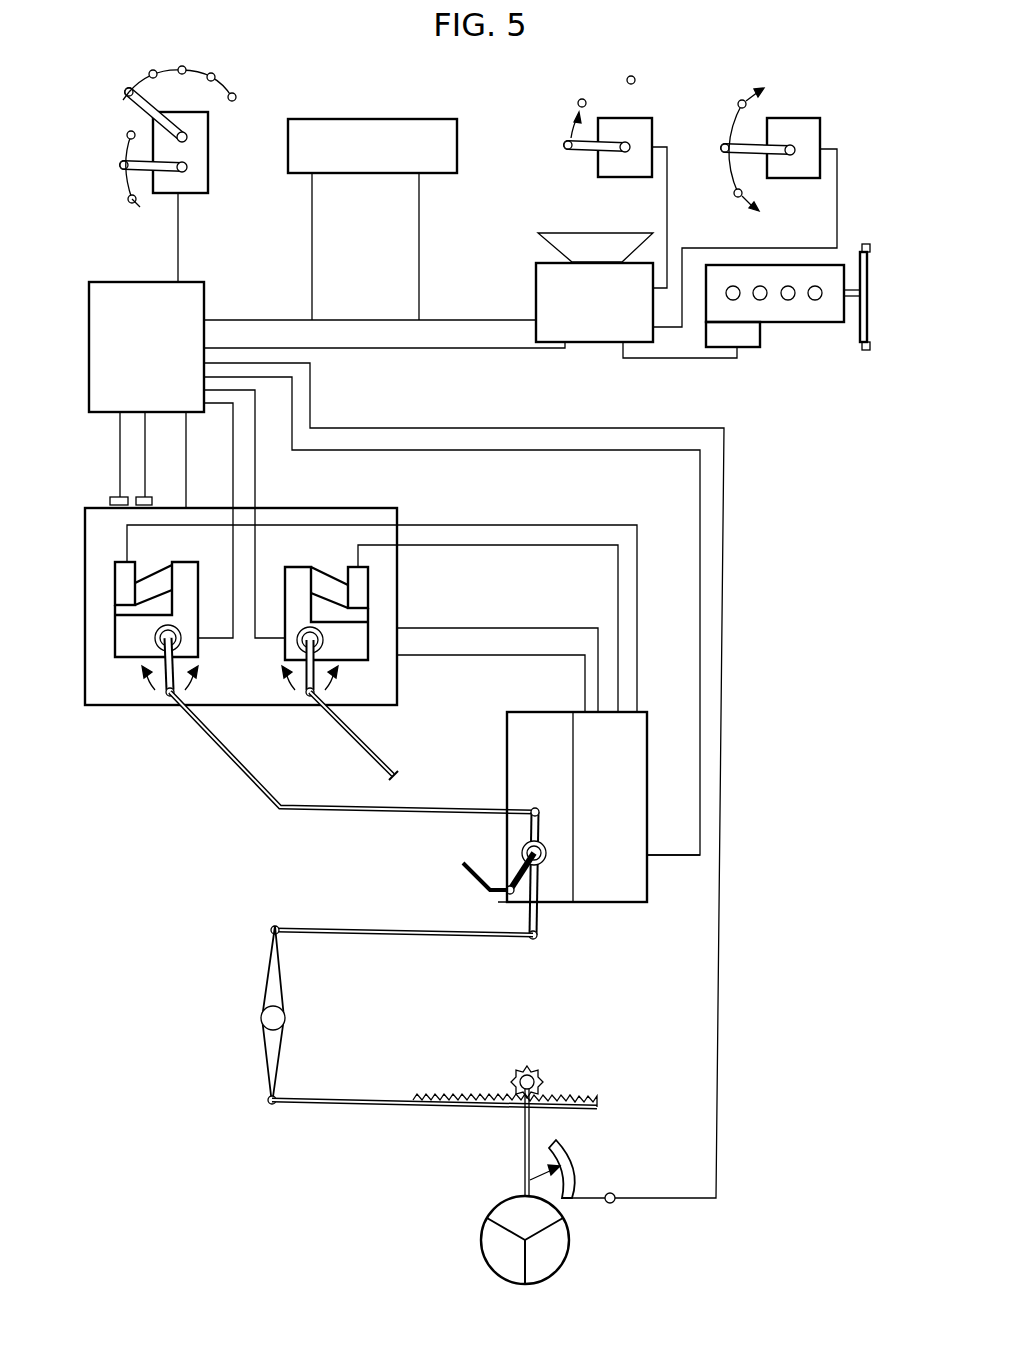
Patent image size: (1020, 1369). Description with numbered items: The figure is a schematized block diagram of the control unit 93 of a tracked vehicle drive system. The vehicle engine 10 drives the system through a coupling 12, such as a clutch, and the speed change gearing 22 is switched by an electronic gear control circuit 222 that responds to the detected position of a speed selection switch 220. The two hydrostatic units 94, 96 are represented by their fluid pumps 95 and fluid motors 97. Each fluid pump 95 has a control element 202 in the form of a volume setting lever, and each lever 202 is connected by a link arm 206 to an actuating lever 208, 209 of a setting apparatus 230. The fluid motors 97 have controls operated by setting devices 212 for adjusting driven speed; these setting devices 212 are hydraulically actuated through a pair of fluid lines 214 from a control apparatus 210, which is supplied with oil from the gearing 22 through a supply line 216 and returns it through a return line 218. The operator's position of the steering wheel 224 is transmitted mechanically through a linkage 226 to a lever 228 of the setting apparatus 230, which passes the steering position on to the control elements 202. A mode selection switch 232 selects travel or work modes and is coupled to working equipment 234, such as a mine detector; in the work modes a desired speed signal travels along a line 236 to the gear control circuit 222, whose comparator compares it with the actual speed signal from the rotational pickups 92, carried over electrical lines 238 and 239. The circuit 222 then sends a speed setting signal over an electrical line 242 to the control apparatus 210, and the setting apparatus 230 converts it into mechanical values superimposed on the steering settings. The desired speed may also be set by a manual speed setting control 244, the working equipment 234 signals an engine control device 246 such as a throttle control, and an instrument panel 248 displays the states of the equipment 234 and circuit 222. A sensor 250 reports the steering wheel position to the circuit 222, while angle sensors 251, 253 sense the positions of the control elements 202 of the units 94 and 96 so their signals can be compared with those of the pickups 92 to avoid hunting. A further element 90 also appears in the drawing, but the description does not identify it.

The vehicle engine 10 is at (795, 300).
The coupling 12 is at (858, 340).
The speed change gearing 22 is at (85, 675).
The shift actuator 90 is at (118, 495).
The rotational pickups 92 is at (150, 494).
The control unit 93 is at (738, 824).
The hydrostatic unit 94 is at (115, 616).
The fluid pump 95 is at (130, 640).
The hydrostatic unit 96 is at (362, 612).
The fluid motor 97 is at (115, 587).
The control element 202 is at (170, 700).
The link arm 206 is at (348, 742).
The actuating lever 208 is at (500, 866).
The actuating lever 209 is at (525, 830).
The control apparatus 210 is at (635, 900).
The setting device 212 is at (127, 560).
The fluid lines 214 is at (445, 527).
The supply line 216 is at (540, 628).
The return line 218 is at (460, 658).
The speed selection switch 220 is at (208, 184).
The electronic gear control circuit 222 is at (205, 290).
The steering wheel 224 is at (482, 1240).
The linkage 226 is at (268, 1060).
The lever 228 is at (525, 918).
The setting apparatus 230 is at (558, 892).
The mode selection switch 232 is at (610, 170).
The working equipment 234 is at (548, 290).
The line 236 is at (487, 352).
The electrical line 238 is at (120, 425).
The electrical line 239 is at (145, 432).
The electrical line 242 is at (668, 452).
The manual speed setting control 244 is at (800, 126).
The engine control device 246 is at (750, 350).
The instrument panel 248 is at (355, 130).
The sensor 250 is at (578, 1170).
The angle sensor 251 is at (170, 620).
The angle sensor 253 is at (310, 620).